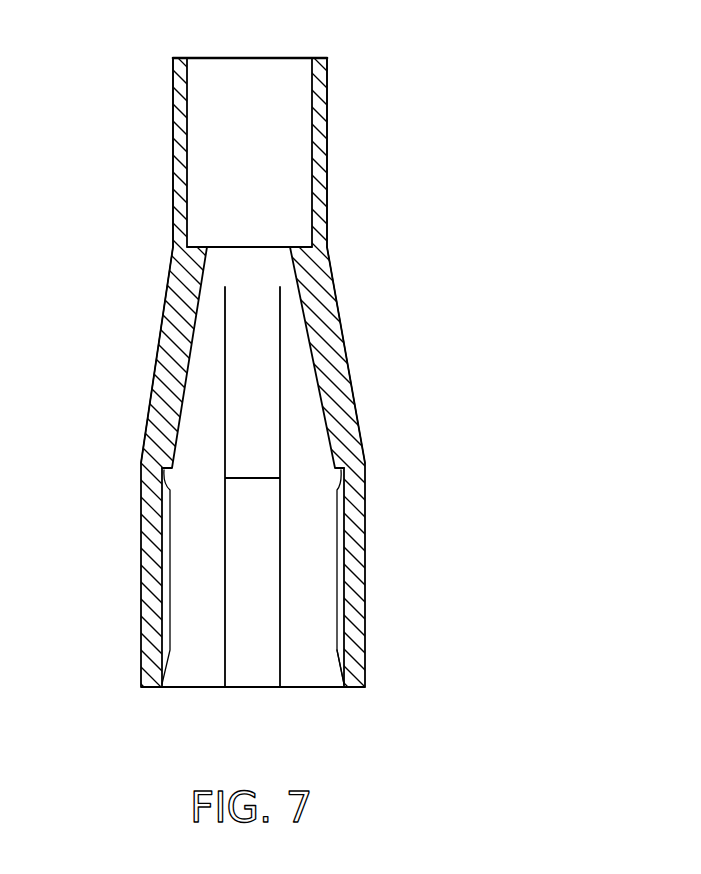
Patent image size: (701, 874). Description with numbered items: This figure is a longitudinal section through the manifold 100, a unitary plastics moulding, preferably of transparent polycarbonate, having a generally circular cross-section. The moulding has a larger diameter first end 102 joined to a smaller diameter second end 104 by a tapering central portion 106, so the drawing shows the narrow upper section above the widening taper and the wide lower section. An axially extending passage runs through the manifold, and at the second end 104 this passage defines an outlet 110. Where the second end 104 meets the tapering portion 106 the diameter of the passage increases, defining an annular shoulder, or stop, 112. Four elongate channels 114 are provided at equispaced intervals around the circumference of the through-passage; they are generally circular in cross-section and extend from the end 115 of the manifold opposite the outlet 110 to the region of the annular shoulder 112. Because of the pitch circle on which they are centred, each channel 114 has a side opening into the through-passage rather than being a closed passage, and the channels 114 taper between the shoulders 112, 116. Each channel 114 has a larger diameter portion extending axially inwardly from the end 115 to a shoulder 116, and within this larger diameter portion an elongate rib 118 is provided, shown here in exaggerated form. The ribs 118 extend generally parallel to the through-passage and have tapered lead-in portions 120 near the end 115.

The manifold 100 is at (350, 403).
The first end 102 is at (254, 258).
The second end 104 is at (328, 78).
The tapering central portion 106 is at (355, 412).
The outlet 110 is at (250, 56).
The annular shoulder 112 is at (210, 258).
The elongate channel 114 is at (250, 478).
The end of the manifold opposite the outlet 115 is at (360, 688).
The shoulder 116 is at (168, 476).
The elongate rib 118 is at (172, 595).
The tapered lead-in portion 120 is at (340, 661).